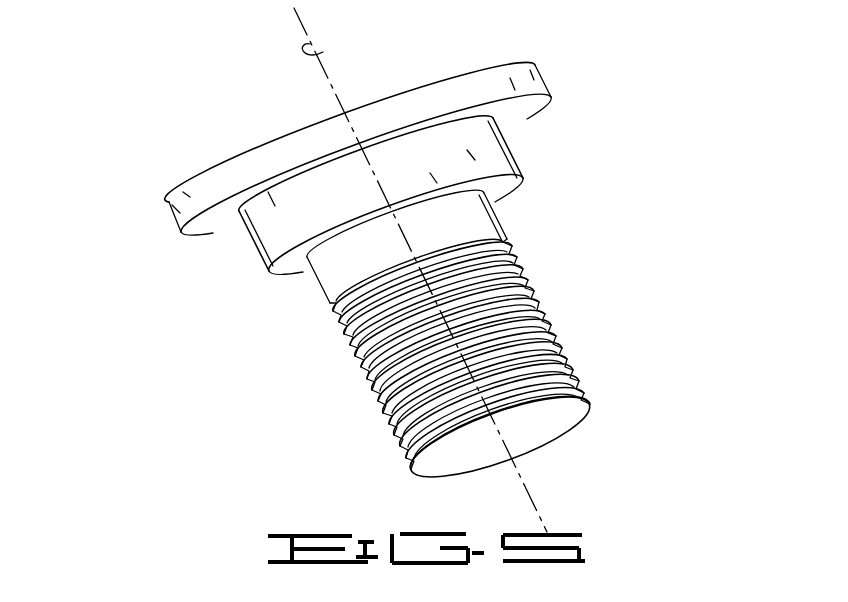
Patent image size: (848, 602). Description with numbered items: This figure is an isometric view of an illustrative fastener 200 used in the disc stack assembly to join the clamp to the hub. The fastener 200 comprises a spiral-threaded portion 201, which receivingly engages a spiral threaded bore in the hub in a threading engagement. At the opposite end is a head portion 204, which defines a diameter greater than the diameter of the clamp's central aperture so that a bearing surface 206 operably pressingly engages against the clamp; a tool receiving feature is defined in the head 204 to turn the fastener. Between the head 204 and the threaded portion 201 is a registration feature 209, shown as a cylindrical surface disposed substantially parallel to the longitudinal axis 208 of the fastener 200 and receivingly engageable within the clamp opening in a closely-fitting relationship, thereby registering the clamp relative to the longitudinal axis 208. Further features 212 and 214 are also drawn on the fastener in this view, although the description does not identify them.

The fastener 200 is at (228, 109).
The spiral-threaded portion 201 is at (551, 322).
The head portion 204 is at (174, 233).
The bearing surface 206 is at (530, 107).
The longitudinal axis 208 is at (323, 52).
The registration feature 209 is at (520, 152).
The flange underside 212 is at (228, 242).
The threads 214 is at (378, 383).